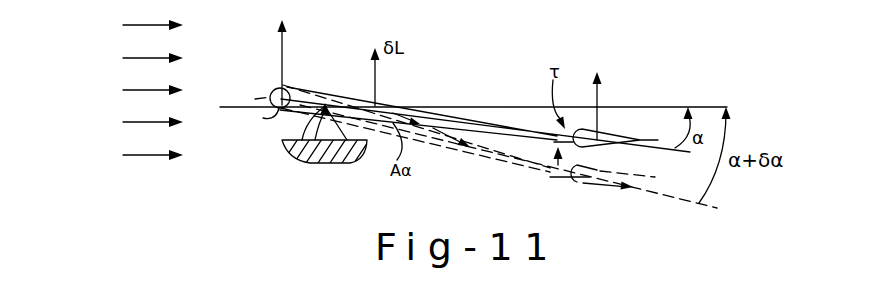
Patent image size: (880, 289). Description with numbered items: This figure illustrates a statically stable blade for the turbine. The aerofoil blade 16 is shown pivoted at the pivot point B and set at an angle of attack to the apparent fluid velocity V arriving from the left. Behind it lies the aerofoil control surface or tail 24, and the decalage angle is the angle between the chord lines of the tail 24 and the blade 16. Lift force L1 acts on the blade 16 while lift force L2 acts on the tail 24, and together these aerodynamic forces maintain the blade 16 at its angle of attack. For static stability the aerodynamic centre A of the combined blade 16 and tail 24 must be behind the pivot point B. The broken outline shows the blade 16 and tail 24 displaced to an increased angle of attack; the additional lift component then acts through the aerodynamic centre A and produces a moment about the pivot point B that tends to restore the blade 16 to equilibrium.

The aerofoil blade 16 is at (424, 113).
The aerofoil control surface 24 is at (583, 185).
The aerodynamic centre A is at (263, 119).
The pivot point B is at (297, 160).
The apparent fluid velocity V is at (164, 90).
The lift force on blade L1 is at (299, 57).
The lift force on tail L2 is at (613, 95).